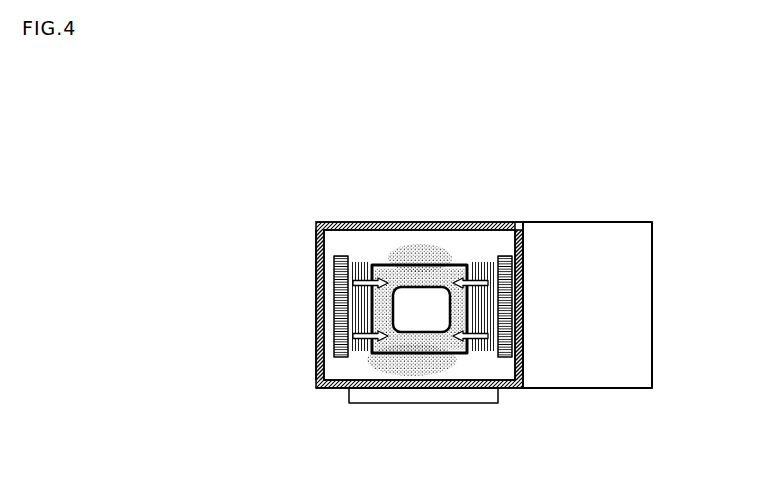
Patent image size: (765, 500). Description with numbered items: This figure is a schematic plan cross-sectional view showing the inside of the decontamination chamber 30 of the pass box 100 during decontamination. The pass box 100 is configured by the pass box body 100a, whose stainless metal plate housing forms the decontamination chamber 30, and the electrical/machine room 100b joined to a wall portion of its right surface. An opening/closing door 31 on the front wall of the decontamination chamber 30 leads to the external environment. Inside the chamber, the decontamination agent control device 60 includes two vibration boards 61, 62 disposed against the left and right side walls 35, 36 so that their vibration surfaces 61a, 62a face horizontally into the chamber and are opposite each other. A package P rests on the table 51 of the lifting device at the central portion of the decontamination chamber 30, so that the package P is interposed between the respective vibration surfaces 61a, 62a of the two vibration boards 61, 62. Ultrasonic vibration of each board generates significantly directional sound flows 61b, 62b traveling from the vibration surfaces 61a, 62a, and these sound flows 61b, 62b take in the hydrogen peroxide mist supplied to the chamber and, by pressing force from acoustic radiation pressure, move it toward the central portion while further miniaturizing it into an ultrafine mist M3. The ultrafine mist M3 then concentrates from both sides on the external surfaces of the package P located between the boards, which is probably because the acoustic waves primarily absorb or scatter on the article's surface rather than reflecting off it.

The pass box 100 is at (472, 256).
The pass box body 100a is at (340, 222).
The electrical/machine room 100b is at (593, 222).
The decontamination chamber 30 is at (445, 314).
The opening/closing door 31 is at (445, 403).
The side wall 35 is at (512, 368).
The side wall 36 is at (332, 362).
The table 51 is at (403, 343).
The decontamination agent control device 60 is at (418, 306).
The vibration board 61 is at (512, 305).
The vibration board 62 is at (334, 318).
The vibration surface 61a is at (485, 260).
The sound flow 61b is at (500, 317).
The vibration surface 62a is at (360, 258).
The sound flow 62b is at (316, 327).
The ultrafine mist M3 is at (428, 262).
The package P is at (423, 315).